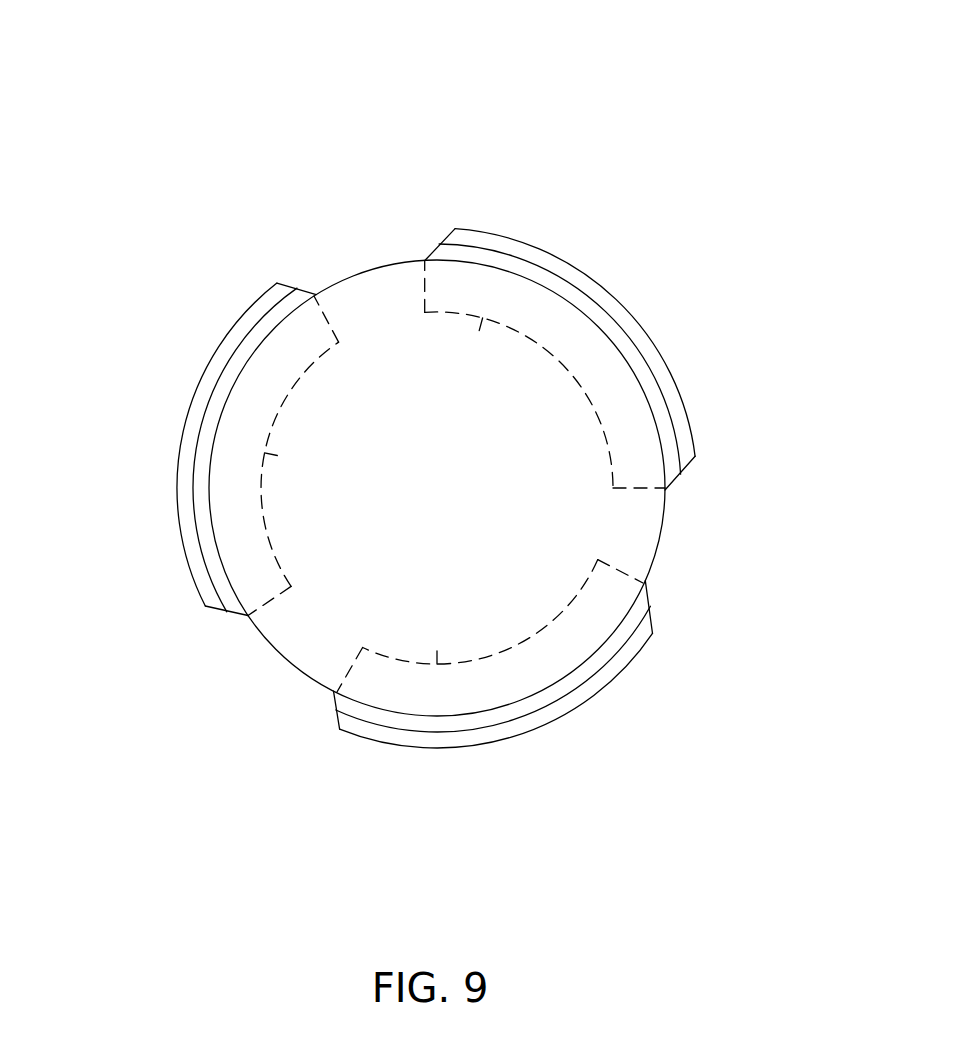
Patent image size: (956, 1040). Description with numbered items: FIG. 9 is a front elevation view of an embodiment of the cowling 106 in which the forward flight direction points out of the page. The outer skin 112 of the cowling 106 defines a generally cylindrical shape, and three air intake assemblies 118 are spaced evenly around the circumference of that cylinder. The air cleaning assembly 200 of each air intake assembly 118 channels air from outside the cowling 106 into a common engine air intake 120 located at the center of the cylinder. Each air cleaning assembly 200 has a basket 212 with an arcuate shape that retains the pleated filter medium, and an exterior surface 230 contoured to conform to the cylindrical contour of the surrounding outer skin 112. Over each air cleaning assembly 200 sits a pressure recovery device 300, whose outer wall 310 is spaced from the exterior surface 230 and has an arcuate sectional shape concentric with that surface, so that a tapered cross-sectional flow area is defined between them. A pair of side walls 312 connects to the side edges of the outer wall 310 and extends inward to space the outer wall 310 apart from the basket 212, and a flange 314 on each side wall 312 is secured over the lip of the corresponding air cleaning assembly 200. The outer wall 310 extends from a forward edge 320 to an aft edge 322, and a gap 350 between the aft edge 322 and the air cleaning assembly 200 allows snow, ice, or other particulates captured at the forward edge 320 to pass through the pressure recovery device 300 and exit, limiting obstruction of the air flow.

The cowling 106 is at (485, 112).
The outer skin 112 is at (277, 654).
The air intake assembly 118 is at (666, 237).
The engine air intake 120 is at (500, 510).
The air cleaning assembly 200 is at (408, 300).
The basket 212 is at (482, 320).
The exterior surface 230 is at (227, 405).
The pressure recovery device 300 is at (690, 425).
The outer wall 310 is at (653, 347).
The side wall 312 is at (453, 229).
The flange 314 is at (318, 296).
The forward edge 320 is at (585, 268).
The aft edge 322 is at (605, 310).
The gap 350 is at (513, 255).